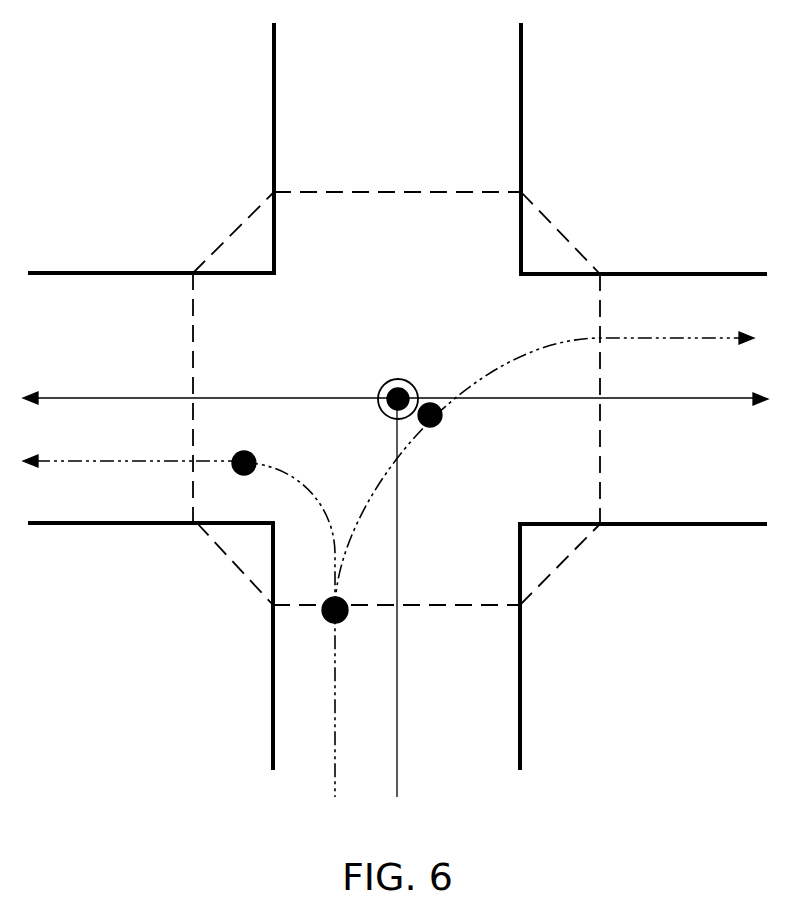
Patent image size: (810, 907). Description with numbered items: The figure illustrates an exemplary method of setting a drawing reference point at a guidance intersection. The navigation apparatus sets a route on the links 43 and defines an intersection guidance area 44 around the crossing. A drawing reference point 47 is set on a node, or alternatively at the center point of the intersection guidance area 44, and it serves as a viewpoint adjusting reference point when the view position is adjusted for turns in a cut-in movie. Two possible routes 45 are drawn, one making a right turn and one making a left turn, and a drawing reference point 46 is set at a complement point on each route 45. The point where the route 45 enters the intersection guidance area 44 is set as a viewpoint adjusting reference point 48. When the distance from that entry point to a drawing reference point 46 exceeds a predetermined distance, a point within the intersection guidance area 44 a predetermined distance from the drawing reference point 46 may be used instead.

The links 43 is at (68, 398).
The intersection guidance area 44 is at (350, 192).
The route 45 is at (656, 338).
The drawing reference point 46 is at (436, 425).
The drawing reference point 47 is at (398, 379).
The viewpoint adjusting reference point 48 is at (340, 622).